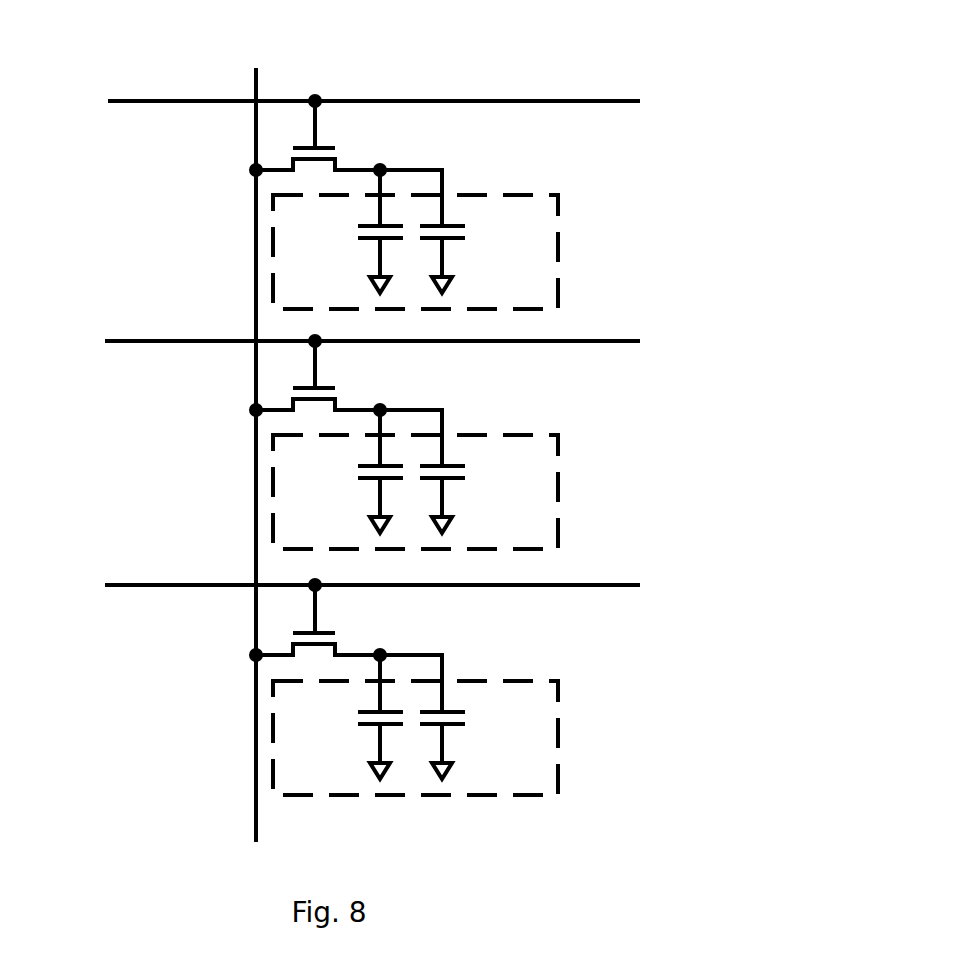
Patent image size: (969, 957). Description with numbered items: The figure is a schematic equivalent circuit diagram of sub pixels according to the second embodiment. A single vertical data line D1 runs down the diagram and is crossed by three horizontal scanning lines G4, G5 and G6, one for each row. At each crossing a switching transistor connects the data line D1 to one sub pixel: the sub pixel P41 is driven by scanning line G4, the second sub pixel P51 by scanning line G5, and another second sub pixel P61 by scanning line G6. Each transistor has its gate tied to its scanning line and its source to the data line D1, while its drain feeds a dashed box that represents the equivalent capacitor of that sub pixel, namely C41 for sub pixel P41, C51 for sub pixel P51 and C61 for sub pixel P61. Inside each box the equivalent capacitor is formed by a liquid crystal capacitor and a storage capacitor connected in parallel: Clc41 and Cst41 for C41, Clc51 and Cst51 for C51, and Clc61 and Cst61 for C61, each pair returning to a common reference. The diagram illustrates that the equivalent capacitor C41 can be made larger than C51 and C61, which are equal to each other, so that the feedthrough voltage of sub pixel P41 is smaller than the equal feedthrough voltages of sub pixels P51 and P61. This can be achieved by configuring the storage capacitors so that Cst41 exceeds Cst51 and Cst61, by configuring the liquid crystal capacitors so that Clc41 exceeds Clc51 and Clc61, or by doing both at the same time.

The data line D1 is at (242, 421).
The gate line G4 is at (335, 104).
The gate line G5 is at (331, 336).
The gate line G6 is at (331, 583).
The sub pixel P41 is at (366, 147).
The second sub pixel P51 is at (366, 387).
The second sub pixel P61 is at (366, 631).
The equivalent capacitor C41 is at (460, 239).
The equivalent capacitor C51 is at (460, 479).
The equivalent capacitor C61 is at (460, 725).
The liquid crystal capacitor Clc41 is at (342, 231).
The storage capacitor Cst41 is at (479, 245).
The liquid crystal capacitor Clc51 is at (342, 471).
The storage capacitor Cst51 is at (479, 485).
The liquid crystal capacitor Clc61 is at (342, 717).
The storage capacitor Cst61 is at (479, 731).